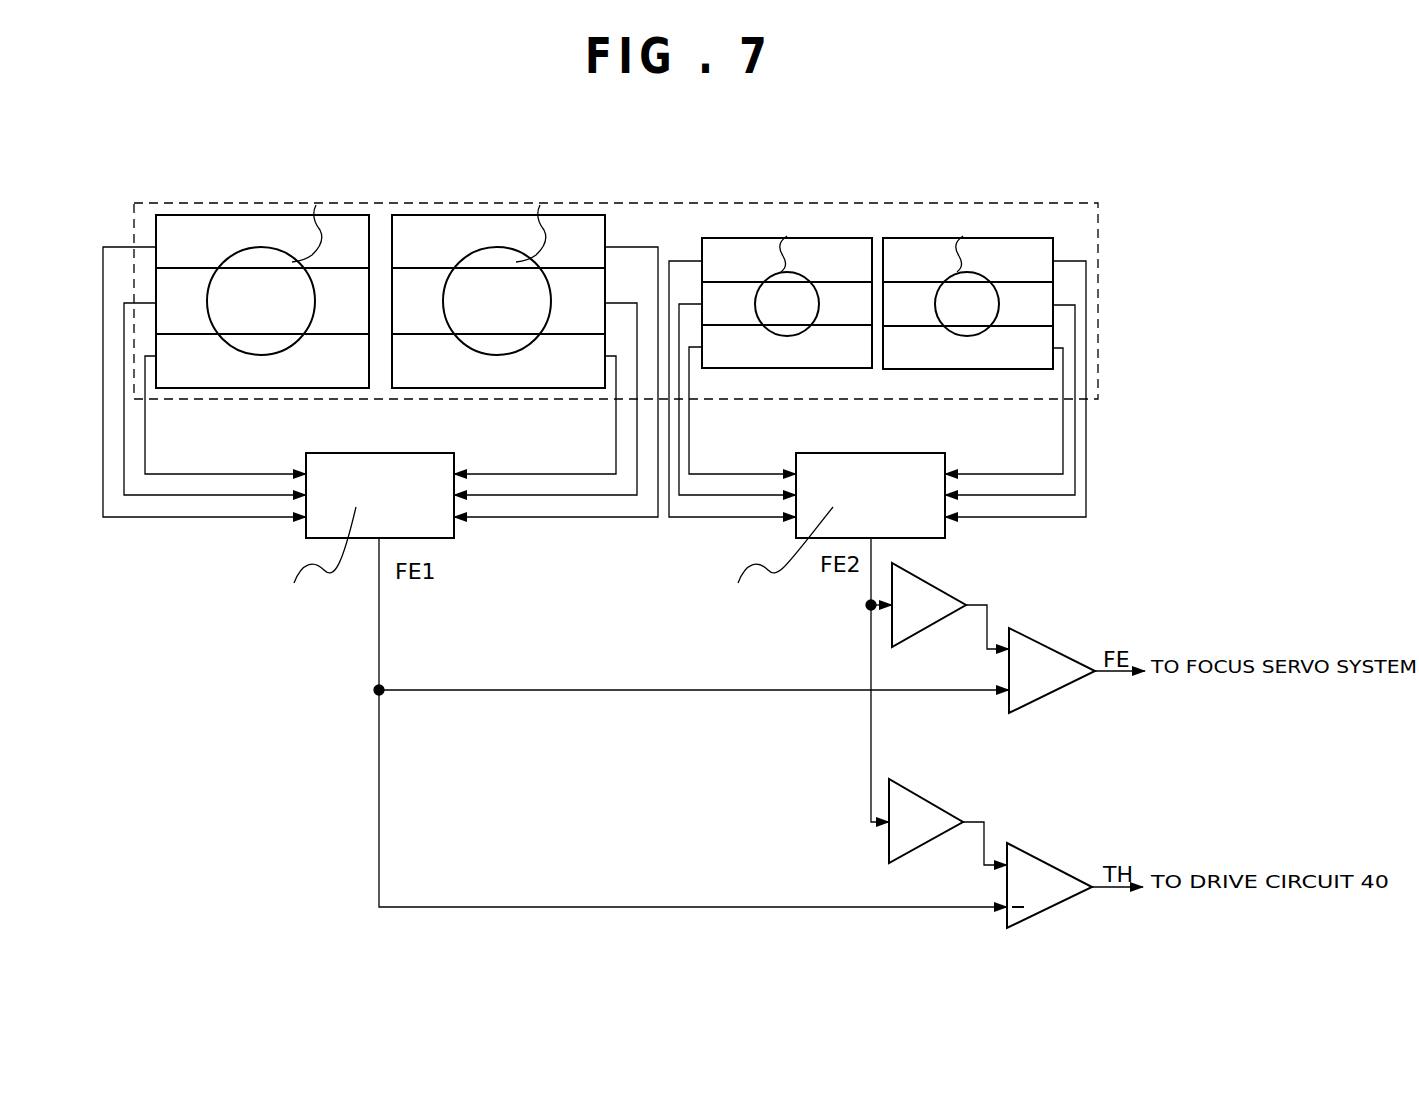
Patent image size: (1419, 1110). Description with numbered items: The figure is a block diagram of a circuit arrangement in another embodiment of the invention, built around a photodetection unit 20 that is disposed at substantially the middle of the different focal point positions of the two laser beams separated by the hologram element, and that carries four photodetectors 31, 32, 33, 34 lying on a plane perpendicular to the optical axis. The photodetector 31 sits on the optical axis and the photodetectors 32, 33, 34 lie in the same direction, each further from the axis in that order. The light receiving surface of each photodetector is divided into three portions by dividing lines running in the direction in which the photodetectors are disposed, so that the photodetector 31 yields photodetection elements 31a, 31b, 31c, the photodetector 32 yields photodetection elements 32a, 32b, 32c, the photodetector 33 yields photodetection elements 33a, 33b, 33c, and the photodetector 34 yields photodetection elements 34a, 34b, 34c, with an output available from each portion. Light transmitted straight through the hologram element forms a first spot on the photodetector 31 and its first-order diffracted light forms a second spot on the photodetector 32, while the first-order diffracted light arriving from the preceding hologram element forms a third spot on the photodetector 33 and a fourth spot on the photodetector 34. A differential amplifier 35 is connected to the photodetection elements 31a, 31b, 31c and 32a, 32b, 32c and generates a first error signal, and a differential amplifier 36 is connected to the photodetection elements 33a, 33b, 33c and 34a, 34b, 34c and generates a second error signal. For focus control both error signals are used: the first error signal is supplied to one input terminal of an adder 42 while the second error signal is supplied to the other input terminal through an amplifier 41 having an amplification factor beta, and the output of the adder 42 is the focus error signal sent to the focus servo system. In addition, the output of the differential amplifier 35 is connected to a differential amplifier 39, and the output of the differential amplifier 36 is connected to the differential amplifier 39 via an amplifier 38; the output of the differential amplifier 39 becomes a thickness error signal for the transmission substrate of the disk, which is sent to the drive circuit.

The photodetection unit 20 is at (638, 203).
The photodetector 31 is at (262, 295).
The photodetection element 31a is at (262, 377).
The photodetection element 31b is at (188, 326).
The photodetection element 31c is at (194, 230).
The photodetector 32 is at (498, 295).
The photodetection element 32a is at (510, 372).
The photodetection element 32b is at (424, 322).
The photodetection element 32c is at (432, 230).
The photodetector 33 is at (787, 287).
The photodetection element 33a is at (811, 358).
The photodetection element 33b is at (727, 310).
The photodetection element 33c is at (738, 248).
The photodetector 34 is at (968, 287).
The photodetection element 34a is at (966, 355).
The photodetection element 34b is at (904, 312).
The photodetection element 34c is at (903, 248).
The differential amplifier 35 is at (331, 452).
The differential amplifier 36 is at (806, 452).
The amplifier 38 is at (936, 808).
The differential amplifier 39 is at (1062, 875).
The amplifier 41 is at (951, 595).
The adder 42 is at (1054, 658).